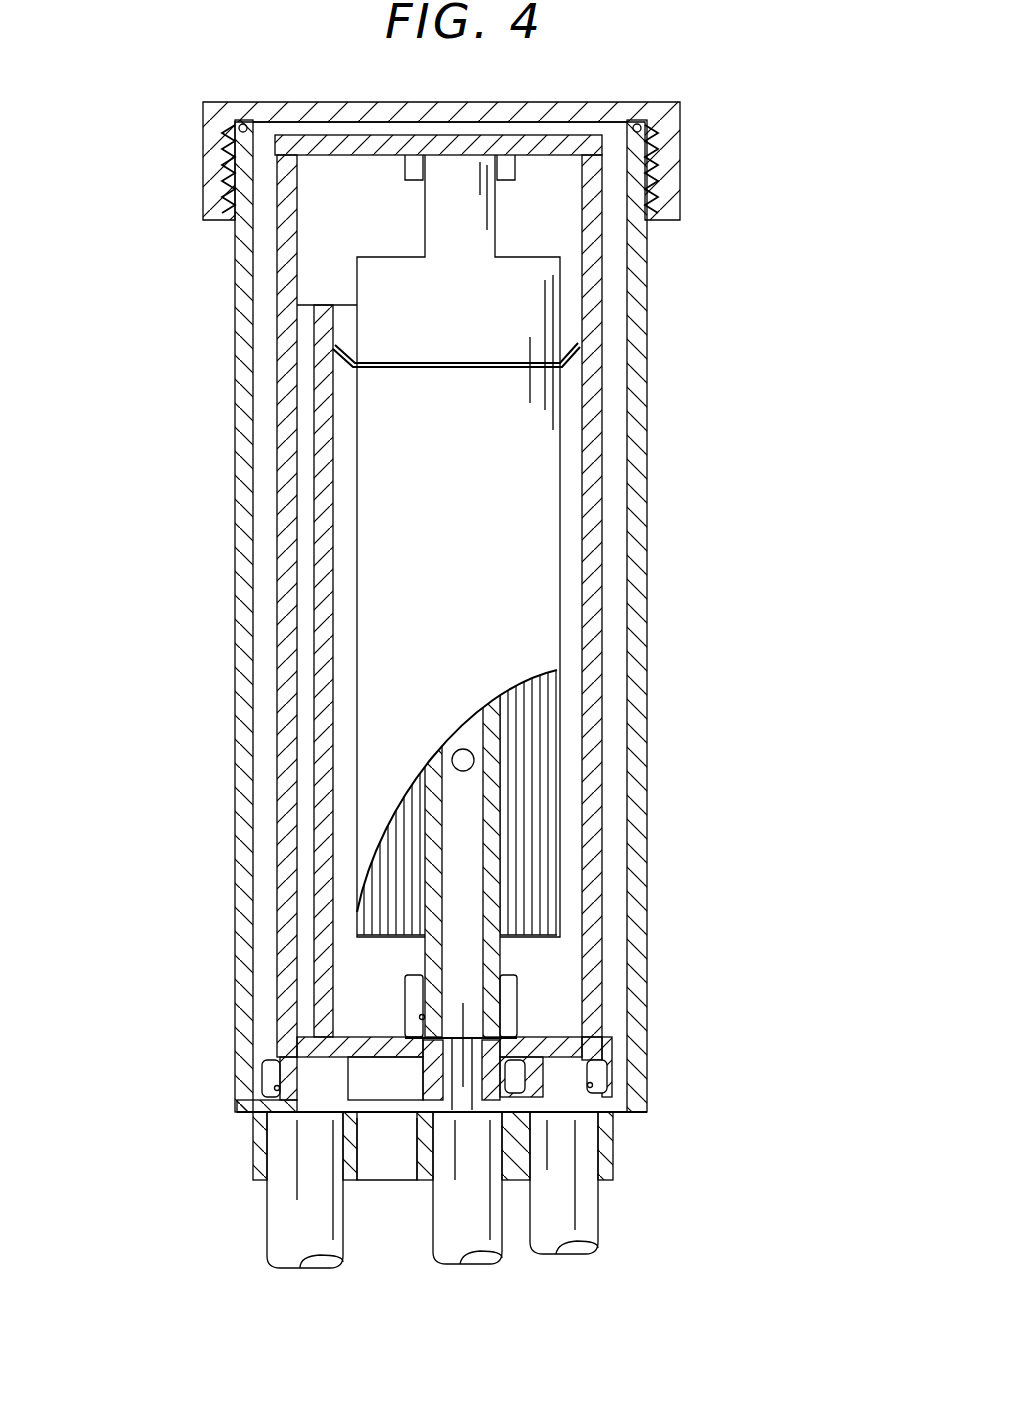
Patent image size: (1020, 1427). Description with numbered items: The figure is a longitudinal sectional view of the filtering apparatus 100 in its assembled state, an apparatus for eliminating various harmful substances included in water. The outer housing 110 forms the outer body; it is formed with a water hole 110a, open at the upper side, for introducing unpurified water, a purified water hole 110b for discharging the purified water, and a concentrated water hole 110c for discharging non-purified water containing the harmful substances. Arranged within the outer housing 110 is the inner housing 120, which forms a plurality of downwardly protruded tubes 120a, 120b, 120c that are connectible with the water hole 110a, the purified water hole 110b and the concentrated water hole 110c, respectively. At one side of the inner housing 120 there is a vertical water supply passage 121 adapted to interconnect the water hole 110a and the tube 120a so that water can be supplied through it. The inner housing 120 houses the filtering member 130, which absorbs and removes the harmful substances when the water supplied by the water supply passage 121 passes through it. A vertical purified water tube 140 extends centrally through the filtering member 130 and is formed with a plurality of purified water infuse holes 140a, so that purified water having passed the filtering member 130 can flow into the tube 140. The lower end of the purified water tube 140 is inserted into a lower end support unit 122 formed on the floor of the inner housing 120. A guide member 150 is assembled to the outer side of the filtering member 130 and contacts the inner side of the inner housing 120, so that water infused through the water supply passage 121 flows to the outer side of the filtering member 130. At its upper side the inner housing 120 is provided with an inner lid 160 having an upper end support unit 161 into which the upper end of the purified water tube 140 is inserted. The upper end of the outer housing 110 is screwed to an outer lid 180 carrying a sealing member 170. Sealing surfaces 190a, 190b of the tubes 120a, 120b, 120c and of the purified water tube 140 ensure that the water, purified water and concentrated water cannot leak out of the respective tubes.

The filtering apparatus 100 is at (705, 195).
The outer housing 110 is at (643, 833).
The water hole 110a is at (280, 1108).
The purified water hole 110b is at (445, 1062).
The concentrated water hole 110c is at (638, 1115).
The inner housing 120 is at (441, 671).
The tube 120a is at (280, 1077).
The tube 120b is at (415, 1073).
The tube 120c is at (600, 1063).
The water supply passage 121 is at (302, 518).
The lower end support unit 122 is at (510, 997).
The filtering member 130 is at (533, 762).
The purified water tube 140 is at (451, 885).
The purified water infuse holes 140a is at (470, 767).
The guide member 150 is at (444, 546).
The inner lid 160 is at (287, 238).
The upper end support unit 161 is at (517, 177).
The sealing member 170 is at (647, 120).
The outer lid 180 is at (212, 143).
The sealing surface 190a is at (593, 1082).
The sealing surface 190b is at (407, 1027).